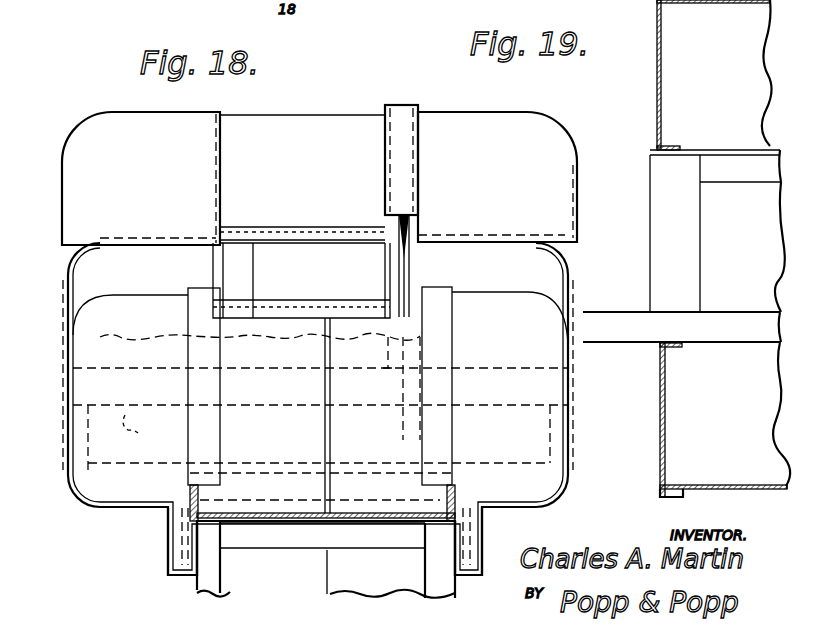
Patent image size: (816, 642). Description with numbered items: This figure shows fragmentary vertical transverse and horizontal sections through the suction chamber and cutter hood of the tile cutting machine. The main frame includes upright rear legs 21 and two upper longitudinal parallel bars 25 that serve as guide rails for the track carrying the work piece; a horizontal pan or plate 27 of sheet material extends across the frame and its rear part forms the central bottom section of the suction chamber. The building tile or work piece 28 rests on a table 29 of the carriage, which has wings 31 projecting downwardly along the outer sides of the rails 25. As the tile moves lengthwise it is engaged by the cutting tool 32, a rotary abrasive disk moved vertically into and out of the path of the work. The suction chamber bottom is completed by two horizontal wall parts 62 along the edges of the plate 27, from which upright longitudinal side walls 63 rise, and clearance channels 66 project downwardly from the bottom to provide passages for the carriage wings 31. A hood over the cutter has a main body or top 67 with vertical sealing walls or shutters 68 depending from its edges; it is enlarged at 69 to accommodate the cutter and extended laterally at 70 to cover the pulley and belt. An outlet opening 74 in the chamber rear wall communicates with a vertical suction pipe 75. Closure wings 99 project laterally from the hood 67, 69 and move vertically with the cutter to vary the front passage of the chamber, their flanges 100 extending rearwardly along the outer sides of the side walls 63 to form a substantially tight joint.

In FIG. 18, the rear legs 21 is at (218, 597).
In FIG. 18, the upper longitudinal parallel bars 25 is at (198, 487).
In FIG. 18, the horizontal pan or plate 27 is at (293, 513).
In FIG. 18, the building tile or work piece 28 is at (144, 430).
In FIG. 18, the table 29 is at (485, 470).
In FIG. 18, the wings 31 is at (172, 548).
In FIG. 18, the cutting tool 32 is at (401, 271).
In FIG. 18, the horizontal wall parts 62 is at (140, 512).
In FIG. 18, the upright longitudinal side walls 63 is at (66, 405).
In FIG. 19, the upright longitudinal side walls 63 is at (769, 490).
In FIG. 18, the longitudinal clearance wells or channels 66 is at (176, 573).
In FIG. 18, the main body or top of hood 67 is at (302, 179).
In FIG. 19, the main body or top of hood 67 is at (717, 233).
In FIG. 18, the vertical sealing walls or shutters 68 is at (225, 292).
In FIG. 18, the enlarged hood portion 69 is at (410, 143).
In FIG. 19, the enlarged hood portion 69 is at (682, 327).
In FIG. 18, the lateral hood extension 70 is at (248, 253).
In FIG. 19, the lateral hood extension 70 is at (715, 231).
In FIG. 18, the outlet opening 74 is at (330, 425).
In FIG. 18, the suction conduit or pipe 75 is at (328, 563).
In FIG. 18, the closure members, shutters or wings 99 is at (319, 178).
In FIG. 19, the closure members, shutters or wings 99 is at (662, 88).
In FIG. 19, the flanges 100 is at (692, 495).